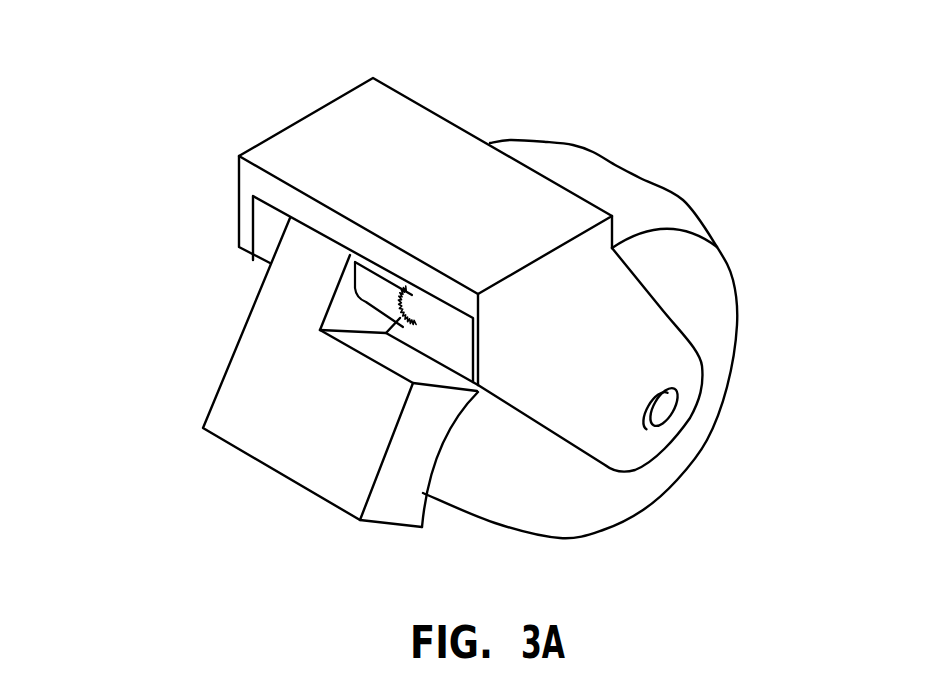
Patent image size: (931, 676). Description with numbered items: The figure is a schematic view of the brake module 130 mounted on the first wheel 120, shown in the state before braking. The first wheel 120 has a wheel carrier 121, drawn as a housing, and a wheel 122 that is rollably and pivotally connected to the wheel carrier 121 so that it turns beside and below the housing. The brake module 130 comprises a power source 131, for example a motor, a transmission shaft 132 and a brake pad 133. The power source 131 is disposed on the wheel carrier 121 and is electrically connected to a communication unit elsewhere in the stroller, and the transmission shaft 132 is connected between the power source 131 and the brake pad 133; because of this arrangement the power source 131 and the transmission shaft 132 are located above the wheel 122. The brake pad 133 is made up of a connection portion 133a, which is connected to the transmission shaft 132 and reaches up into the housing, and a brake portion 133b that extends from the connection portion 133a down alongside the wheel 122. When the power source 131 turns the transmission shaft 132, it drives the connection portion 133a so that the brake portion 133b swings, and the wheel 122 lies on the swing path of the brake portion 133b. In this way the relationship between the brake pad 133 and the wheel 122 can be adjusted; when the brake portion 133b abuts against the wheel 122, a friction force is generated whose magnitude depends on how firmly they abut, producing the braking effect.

The first wheel 120 is at (120, 45).
The wheel carrier 121 is at (553, 213).
The wheel 122 is at (697, 275).
The brake module 130 is at (120, 128).
The power source 131 is at (443, 330).
The transmission shaft 132 is at (378, 288).
The brake pad 133 is at (298, 414).
The connection portion 133a is at (303, 270).
The brake portion 133b is at (387, 448).